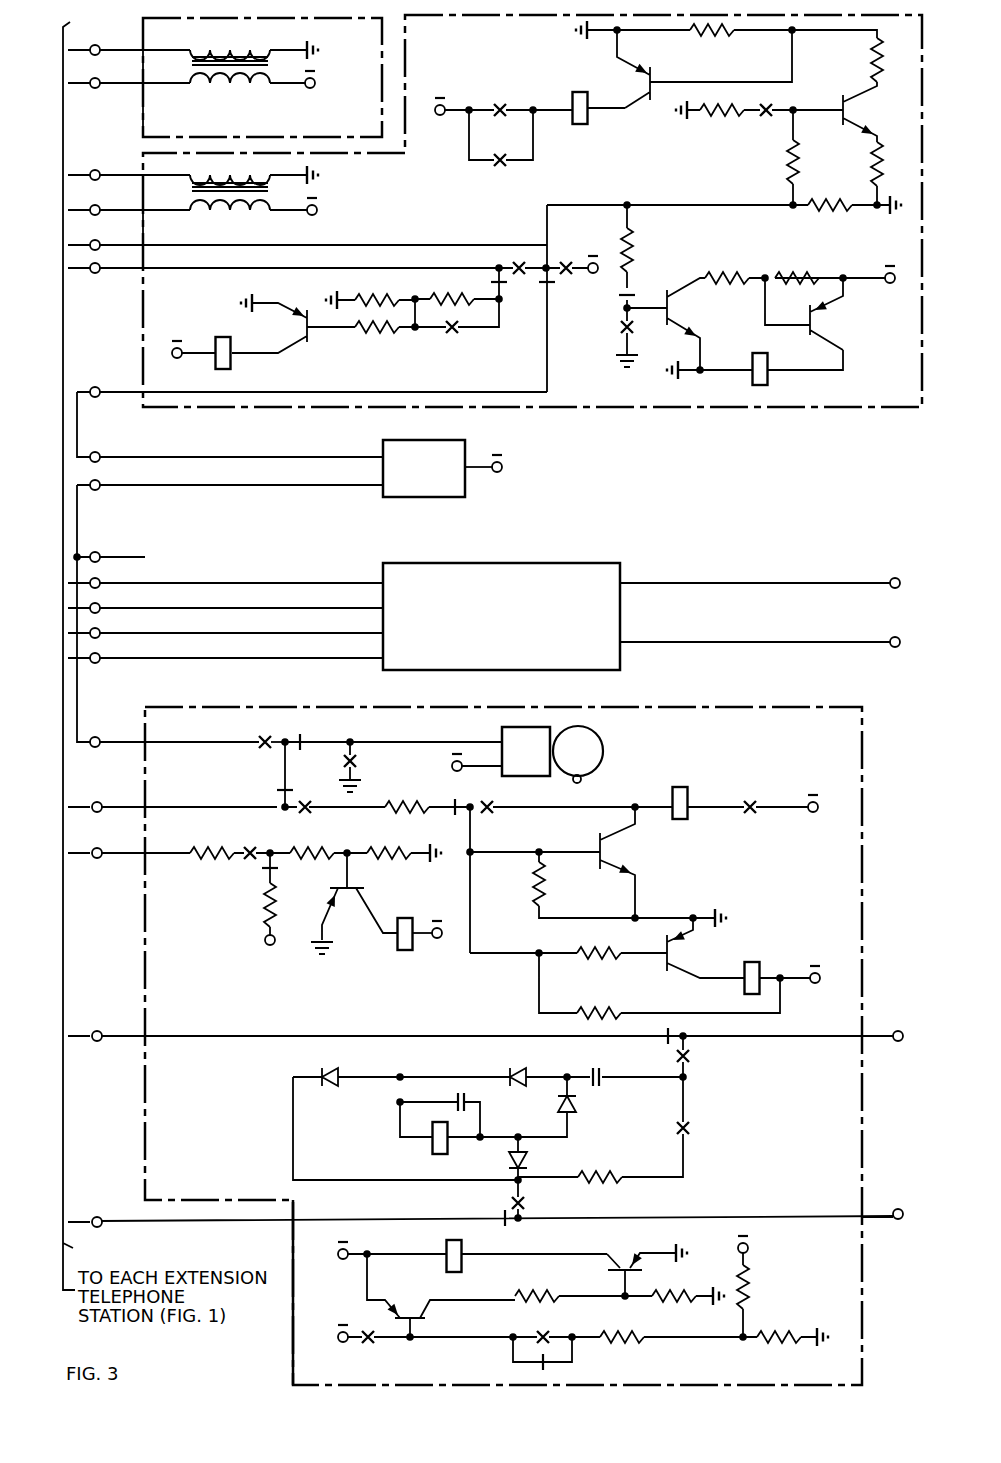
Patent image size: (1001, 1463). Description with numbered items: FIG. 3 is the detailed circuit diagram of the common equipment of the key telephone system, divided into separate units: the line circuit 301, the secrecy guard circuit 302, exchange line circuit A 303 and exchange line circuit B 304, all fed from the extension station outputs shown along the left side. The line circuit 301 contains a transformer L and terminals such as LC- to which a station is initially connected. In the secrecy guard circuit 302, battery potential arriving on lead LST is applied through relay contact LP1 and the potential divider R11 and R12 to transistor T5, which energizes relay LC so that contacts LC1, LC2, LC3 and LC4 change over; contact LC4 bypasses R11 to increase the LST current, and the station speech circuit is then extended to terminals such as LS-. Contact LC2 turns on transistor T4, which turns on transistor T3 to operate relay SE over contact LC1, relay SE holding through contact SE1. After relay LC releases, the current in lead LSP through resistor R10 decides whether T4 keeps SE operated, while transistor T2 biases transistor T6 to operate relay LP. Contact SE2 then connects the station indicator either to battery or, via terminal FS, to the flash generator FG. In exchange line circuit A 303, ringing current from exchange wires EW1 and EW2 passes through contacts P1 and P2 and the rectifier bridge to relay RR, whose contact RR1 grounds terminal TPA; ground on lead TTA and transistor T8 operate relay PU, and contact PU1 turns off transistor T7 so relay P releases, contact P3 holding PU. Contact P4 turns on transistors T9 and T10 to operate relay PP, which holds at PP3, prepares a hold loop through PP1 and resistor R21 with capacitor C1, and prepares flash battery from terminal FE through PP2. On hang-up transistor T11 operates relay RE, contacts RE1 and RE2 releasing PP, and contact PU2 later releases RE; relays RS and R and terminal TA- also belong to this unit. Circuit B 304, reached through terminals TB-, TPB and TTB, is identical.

The line circuit 301 is at (360, 127).
The secrecy guard circuit 302 is at (700, 393).
The exchange line circuit A 303 is at (820, 761).
The exchange line circuit B 304 is at (590, 638).
The LC− output LC- is at (103, 73).
The secrecy guard circuit terminals L is at (235, 128).
The LS− terminal LS- is at (103, 200).
The LSP lead LSP is at (105, 235).
The LST lead LST is at (92, 273).
The SE1 relay contact SE1 is at (500, 104).
The SE relay SE is at (578, 94).
The LC1 relay contact LC1 is at (500, 155).
The transistor T3 is at (653, 80).
The LC2 relay contact LC2 is at (769, 117).
The transistor T4 is at (858, 109).
The resistor R10 is at (840, 188).
The LP1 relay contact LP1 is at (516, 278).
The SE2 relay contact SE2 is at (563, 276).
The resistor R11 is at (458, 283).
The resistor R12 is at (380, 282).
The LC4 relay contact LC4 is at (454, 334).
The LC3 relay contact LC3 is at (620, 320).
The transistor T2 is at (686, 305).
The transistor T6 is at (816, 322).
The LP relay LP is at (758, 352).
The LC relay LC is at (224, 337).
The transistor T5 is at (316, 338).
The FS terminal FS is at (103, 378).
The FE terminal FE is at (93, 483).
The flash generator circuit FG is at (442, 456).
The TB− terminal TB- is at (98, 582).
The TPB lead TPB is at (98, 632).
The TTB output TTB is at (98, 657).
The exchange wire EW1 is at (893, 566).
The exchange wire EW2 is at (893, 630).
The PP2 relay contact PP2 is at (262, 738).
The PU1 relay contact PU1 is at (298, 795).
The RR1 relay contact RR1 is at (356, 763).
The ringing current detector relay RR is at (538, 770).
The RE1 relay contact RE1 is at (452, 766).
The TPA terminal TPA is at (106, 793).
The RS relay RS is at (684, 816).
The PU2 relay contact PU2 is at (748, 799).
The TTA lead TTA is at (100, 840).
The P3 relay contact P3 is at (262, 872).
The transistor T8 is at (349, 902).
The PU relay PU is at (406, 918).
The transistor T11 is at (618, 851).
The transistor T7 is at (672, 955).
The relay R is at (754, 962).
The TA− terminal TA- is at (106, 1023).
The capacitor C1 is at (595, 1063).
The P1 relay contact P1 is at (676, 1052).
The PP1 relay contact PP1 is at (689, 1128).
The hold resistor R21 is at (606, 1175).
The P2 relay contact P2 is at (506, 1206).
The PP relay PP is at (448, 1242).
The transistor T9 is at (622, 1261).
The transistor T10 is at (412, 1310).
The RE2 relay contact RE2 is at (370, 1342).
The PP3 relay contact PP3 is at (545, 1333).
The P4 relay contact P4 is at (548, 1370).